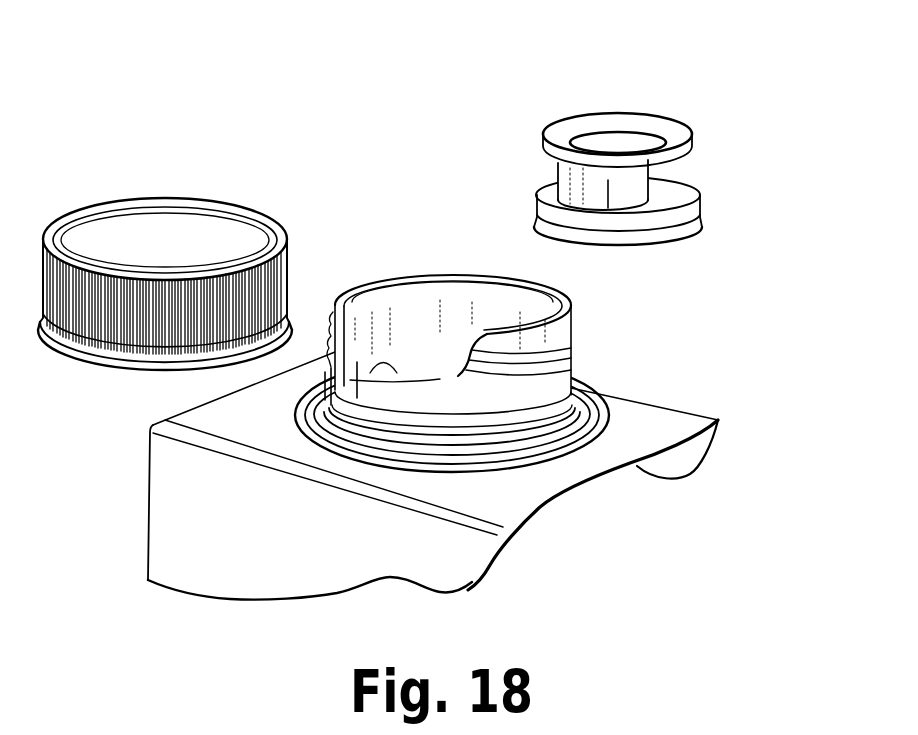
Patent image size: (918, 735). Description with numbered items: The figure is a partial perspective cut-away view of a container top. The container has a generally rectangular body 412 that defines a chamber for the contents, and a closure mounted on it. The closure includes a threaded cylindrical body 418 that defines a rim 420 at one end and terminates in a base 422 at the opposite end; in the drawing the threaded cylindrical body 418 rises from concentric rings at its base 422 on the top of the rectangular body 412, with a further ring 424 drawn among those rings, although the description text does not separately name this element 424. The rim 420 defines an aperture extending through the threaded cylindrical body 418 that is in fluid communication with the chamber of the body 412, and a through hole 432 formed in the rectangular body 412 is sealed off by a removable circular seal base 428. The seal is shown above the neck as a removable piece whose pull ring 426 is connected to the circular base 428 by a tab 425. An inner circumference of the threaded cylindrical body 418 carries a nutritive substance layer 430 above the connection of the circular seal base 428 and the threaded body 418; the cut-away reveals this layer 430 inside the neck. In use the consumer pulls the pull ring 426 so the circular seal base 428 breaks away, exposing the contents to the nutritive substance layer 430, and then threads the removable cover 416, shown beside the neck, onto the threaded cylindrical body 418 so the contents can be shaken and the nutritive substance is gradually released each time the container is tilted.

The rectangular body 412 is at (220, 418).
The removable cover 416 is at (158, 220).
The threaded cylindrical body 418 is at (493, 430).
The rim 420 is at (567, 313).
The base 422 is at (592, 433).
The ring 424 is at (497, 377).
The tab 425 is at (557, 178).
The pull ring 426 is at (617, 127).
The circular base 428 is at (697, 203).
The nutritive substance layer 430 is at (433, 336).
The through hole 432 is at (352, 400).